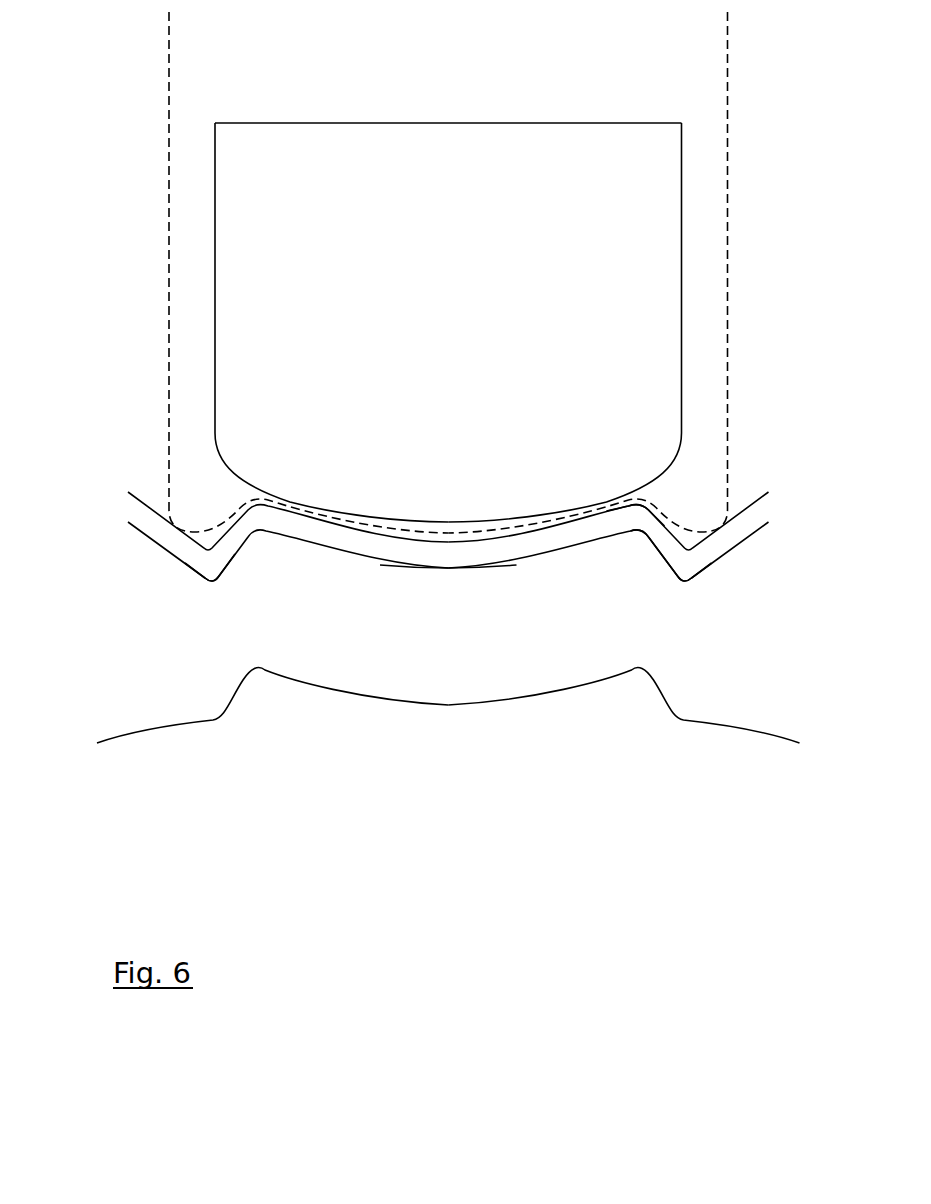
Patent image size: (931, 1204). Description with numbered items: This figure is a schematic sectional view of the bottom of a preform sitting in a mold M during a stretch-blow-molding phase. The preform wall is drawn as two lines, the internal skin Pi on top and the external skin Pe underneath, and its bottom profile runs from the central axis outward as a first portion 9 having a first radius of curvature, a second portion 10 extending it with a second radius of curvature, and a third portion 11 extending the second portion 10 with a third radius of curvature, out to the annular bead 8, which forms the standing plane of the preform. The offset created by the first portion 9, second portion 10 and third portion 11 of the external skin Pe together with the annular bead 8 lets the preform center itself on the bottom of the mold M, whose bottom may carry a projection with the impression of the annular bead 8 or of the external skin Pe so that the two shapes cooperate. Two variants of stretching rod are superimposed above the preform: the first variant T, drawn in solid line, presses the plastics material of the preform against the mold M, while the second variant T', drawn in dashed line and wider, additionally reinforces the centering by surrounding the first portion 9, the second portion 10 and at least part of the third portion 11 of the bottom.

The stretching rod T is at (448, 281).
The stretching rod T' is at (398, 272).
The internal skin Pi is at (139, 480).
The external skin Pe is at (726, 572).
The annular bead 8 is at (215, 598).
The first portion 9 is at (403, 585).
The second portion 10 is at (662, 496).
The third portion 11 is at (641, 564).
The mold M is at (728, 725).